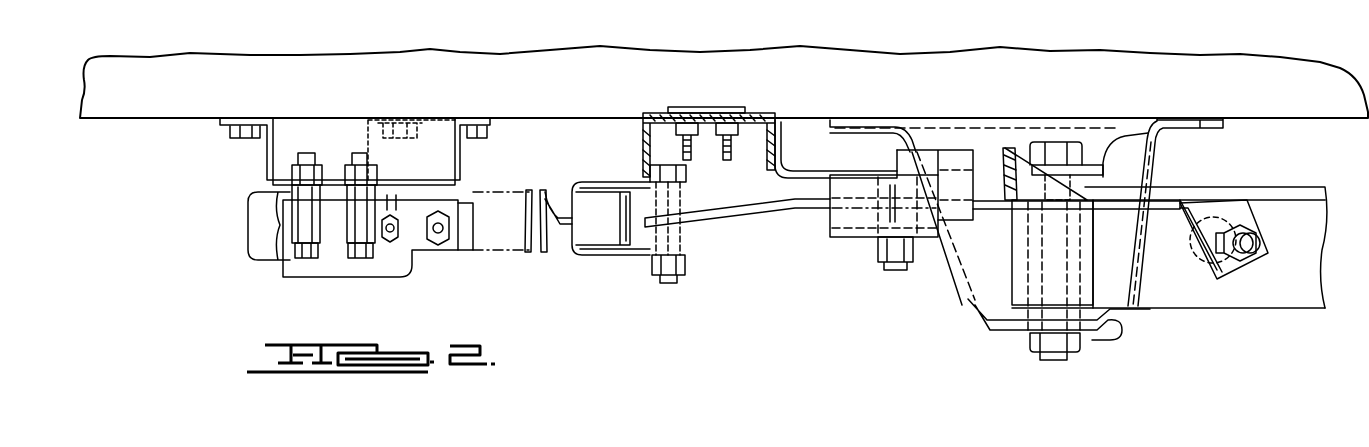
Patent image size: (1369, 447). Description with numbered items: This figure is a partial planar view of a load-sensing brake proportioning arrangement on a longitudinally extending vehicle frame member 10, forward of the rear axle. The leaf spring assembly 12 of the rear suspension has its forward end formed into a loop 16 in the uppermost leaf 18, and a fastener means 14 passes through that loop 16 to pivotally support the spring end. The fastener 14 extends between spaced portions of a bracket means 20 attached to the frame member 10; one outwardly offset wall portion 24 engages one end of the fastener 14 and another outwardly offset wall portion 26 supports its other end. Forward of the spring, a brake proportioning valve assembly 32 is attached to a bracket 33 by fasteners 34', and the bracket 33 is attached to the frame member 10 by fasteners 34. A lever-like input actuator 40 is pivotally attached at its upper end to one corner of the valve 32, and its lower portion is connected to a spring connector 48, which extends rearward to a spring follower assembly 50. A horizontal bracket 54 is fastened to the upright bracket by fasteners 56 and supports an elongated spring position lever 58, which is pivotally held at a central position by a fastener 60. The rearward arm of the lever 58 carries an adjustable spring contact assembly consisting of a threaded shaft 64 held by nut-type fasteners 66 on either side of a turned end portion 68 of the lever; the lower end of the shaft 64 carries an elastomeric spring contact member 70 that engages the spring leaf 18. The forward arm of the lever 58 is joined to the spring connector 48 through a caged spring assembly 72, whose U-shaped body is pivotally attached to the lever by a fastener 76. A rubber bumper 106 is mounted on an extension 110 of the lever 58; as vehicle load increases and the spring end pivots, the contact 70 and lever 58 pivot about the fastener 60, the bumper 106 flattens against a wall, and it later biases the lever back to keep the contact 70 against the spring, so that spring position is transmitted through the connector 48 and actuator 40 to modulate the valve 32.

The vehicle frame member 10 is at (1308, 78).
The leaf spring assembly 12 is at (1258, 318).
The fastener means 14 is at (1062, 140).
The loop 16 is at (1030, 293).
The uppermost leaf 18 is at (1206, 298).
The bracket means 20 is at (945, 302).
The wall portion 24 is at (1132, 163).
The outwardly offset wall portion 26 is at (1093, 340).
The brake proportioning valve assembly 32 is at (300, 288).
The bracket 33 is at (268, 170).
The fasteners 34 is at (424, 102).
The fasteners 34' is at (292, 233).
The input actuator 40 is at (248, 218).
The spring connector 48 is at (526, 268).
The spring follower assembly 50 is at (736, 232).
The horizontal bracket 54 is at (810, 178).
The fasteners 56 is at (724, 107).
The spring position lever 58 is at (792, 210).
The fastener 60 is at (890, 268).
The threaded shaft 64 is at (1258, 243).
The nut-type fasteners 66 is at (1242, 222).
The turned end portion 68 is at (1240, 276).
The spring contact member 70 is at (1197, 260).
The caged spring assembly 72 is at (619, 268).
The fastener 76 is at (668, 285).
The rubber bumper 106 is at (990, 190).
The extension 110 is at (1021, 164).